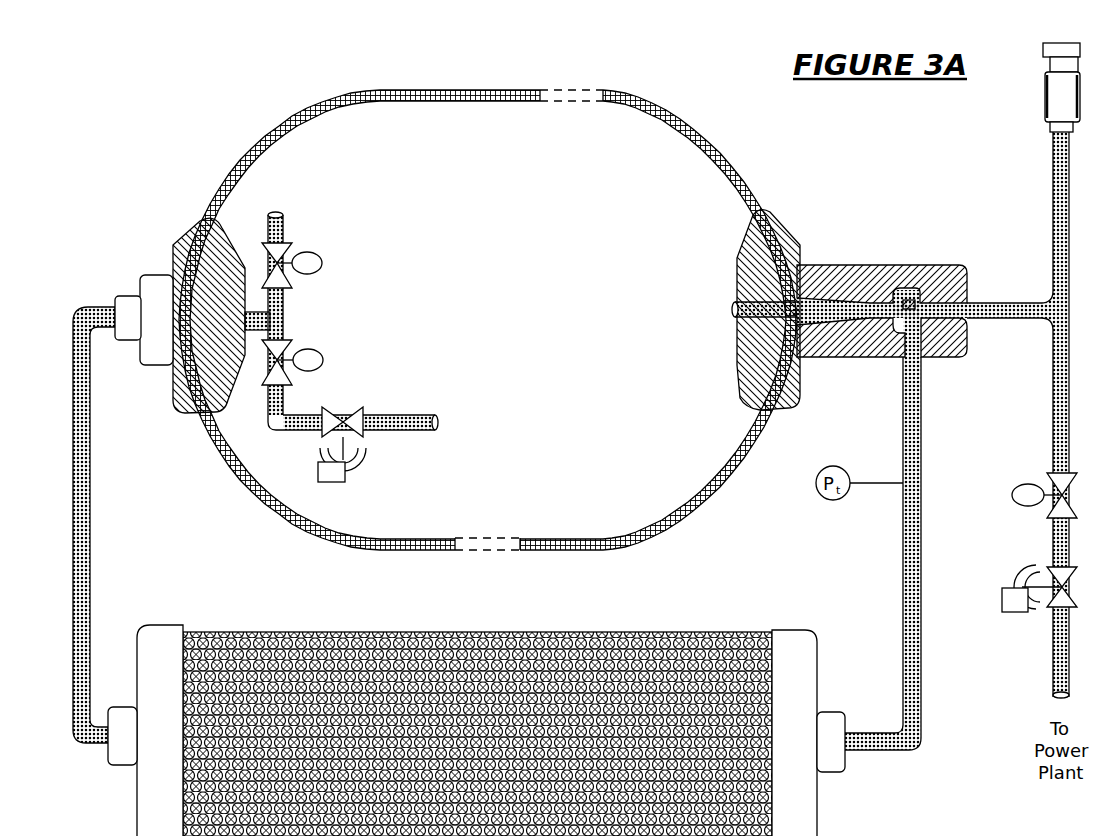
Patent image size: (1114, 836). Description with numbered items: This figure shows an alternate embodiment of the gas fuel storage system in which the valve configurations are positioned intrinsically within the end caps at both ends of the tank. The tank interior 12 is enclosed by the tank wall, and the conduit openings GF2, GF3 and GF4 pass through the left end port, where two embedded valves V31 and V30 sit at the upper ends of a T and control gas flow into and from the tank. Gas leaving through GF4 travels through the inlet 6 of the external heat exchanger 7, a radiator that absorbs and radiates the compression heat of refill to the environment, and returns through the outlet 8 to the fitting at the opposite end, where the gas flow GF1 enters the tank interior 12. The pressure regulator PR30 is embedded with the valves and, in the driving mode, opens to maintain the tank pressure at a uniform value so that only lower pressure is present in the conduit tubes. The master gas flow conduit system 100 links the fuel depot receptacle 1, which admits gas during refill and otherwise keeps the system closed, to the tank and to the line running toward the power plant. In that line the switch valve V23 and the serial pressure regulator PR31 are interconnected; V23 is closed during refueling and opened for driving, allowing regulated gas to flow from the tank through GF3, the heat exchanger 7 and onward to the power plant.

The tank interior 12 is at (541, 480).
The gas flow to the tank exterior GF4 is at (99, 307).
The gas flow from inlet GF2 is at (281, 214).
The gas flow through pressure regulator GF3 is at (441, 414).
The gas flow into the tank GF1 is at (733, 306).
The embedded valve V31 is at (325, 260).
The embedded valve V30 is at (324, 358).
The pressure regulator PR30 is at (338, 482).
The master gas flow conduit system 100 is at (1040, 302).
The fuel depot receptacle 1 is at (1045, 101).
The switch valve V23 is at (1047, 478).
The pressure regulator PR31 is at (1015, 613).
The outlet 8 is at (866, 733).
The heat exchanger 7 is at (658, 648).
The inlet 6 is at (79, 748).